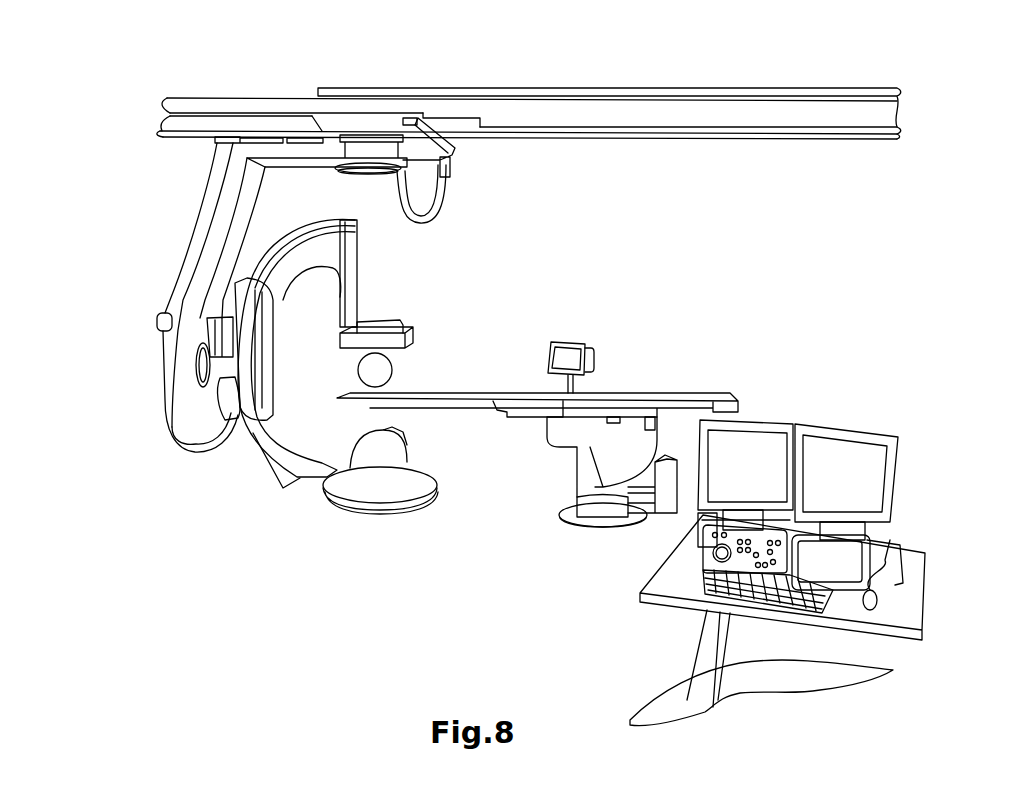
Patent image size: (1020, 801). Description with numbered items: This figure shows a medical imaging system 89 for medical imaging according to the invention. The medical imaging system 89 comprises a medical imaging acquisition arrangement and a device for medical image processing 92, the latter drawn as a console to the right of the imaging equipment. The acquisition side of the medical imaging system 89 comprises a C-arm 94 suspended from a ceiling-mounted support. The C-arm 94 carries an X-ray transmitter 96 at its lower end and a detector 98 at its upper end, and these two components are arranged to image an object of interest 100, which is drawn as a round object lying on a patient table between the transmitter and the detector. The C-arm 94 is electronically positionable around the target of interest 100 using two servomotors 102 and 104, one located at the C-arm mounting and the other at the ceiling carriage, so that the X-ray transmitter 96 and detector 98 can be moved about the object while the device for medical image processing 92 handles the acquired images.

The medical imaging system 89 is at (171, 207).
The device for medical image processing 92 is at (817, 418).
The C-arm 94 is at (217, 368).
The X-ray transmitter 96 is at (383, 448).
The detector 98 is at (420, 336).
The object of interest 100 is at (400, 377).
The servomotor 102 is at (256, 390).
The servomotor 104 is at (372, 158).